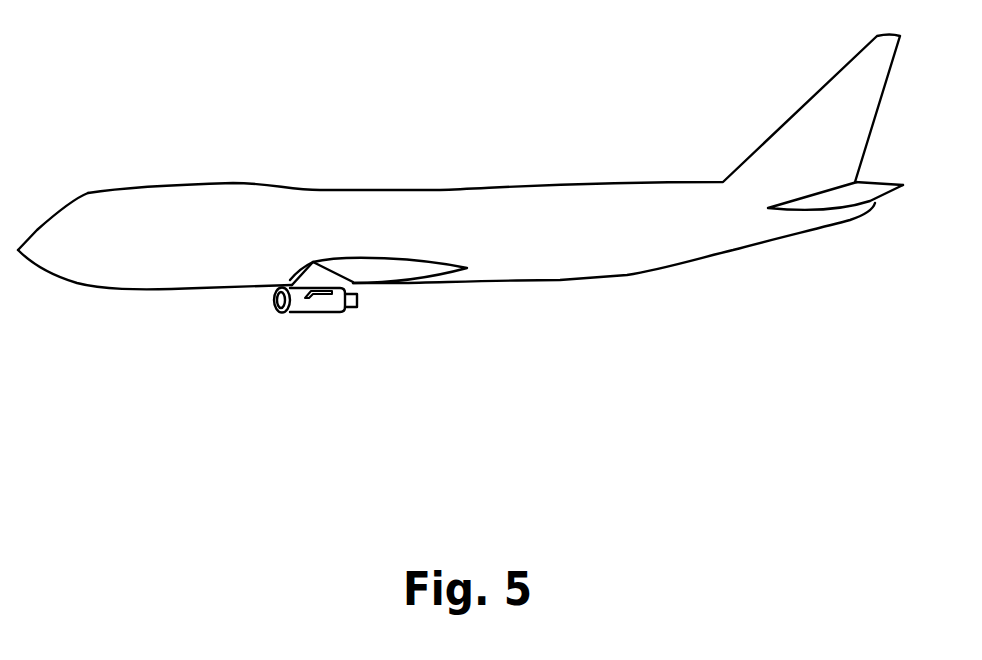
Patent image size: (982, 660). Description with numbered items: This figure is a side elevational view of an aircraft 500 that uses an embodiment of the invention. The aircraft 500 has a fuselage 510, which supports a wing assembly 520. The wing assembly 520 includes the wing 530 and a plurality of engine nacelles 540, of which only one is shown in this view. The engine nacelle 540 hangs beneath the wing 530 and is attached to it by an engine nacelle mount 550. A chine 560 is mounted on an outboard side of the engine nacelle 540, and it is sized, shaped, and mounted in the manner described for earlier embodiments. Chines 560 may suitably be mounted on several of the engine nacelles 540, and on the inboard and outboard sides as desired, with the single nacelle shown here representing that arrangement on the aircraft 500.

The aircraft 500 is at (240, 405).
The fuselage 510 is at (543, 177).
The wing assembly 520 is at (352, 243).
The wing 530 is at (392, 252).
The engine nacelle 540 is at (345, 312).
The engine nacelle mount 550 is at (302, 272).
The chine 560 is at (312, 300).